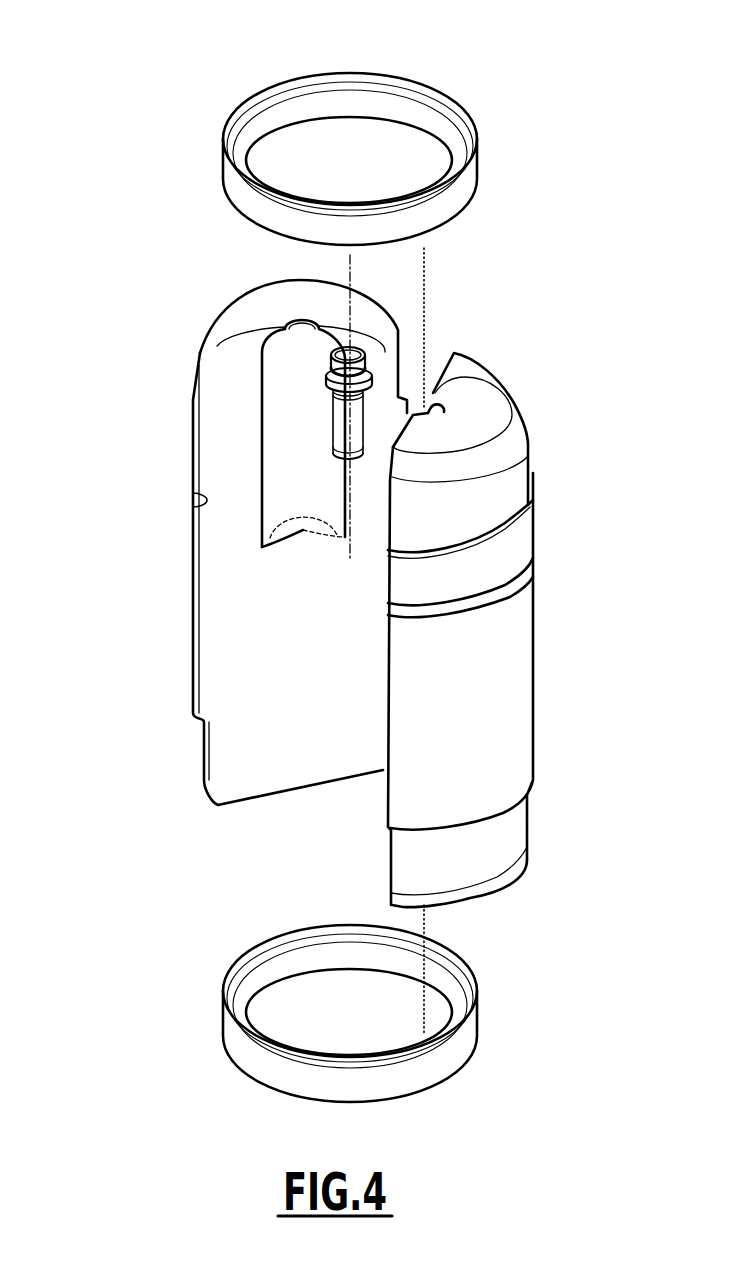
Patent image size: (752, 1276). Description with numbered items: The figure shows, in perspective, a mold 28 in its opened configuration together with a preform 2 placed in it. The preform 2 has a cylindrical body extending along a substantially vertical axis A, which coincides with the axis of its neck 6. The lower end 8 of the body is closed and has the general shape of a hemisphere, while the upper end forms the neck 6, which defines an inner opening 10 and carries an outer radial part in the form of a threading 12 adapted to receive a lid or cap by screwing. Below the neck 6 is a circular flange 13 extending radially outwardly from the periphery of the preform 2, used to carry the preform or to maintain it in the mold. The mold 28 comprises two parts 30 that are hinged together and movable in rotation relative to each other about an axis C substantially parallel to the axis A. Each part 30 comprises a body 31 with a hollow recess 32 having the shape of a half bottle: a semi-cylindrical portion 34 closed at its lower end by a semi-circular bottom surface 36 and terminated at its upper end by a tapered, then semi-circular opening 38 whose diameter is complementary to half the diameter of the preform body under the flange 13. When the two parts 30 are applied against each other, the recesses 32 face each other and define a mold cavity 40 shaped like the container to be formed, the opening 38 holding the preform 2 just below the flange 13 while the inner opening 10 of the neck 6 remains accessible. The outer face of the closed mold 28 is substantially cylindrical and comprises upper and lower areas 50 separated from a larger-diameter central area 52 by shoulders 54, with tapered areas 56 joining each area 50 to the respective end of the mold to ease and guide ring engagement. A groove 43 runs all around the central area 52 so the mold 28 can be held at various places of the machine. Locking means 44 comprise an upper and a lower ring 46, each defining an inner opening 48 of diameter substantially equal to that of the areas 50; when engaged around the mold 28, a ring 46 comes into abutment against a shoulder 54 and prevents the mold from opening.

The preform 2 is at (315, 428).
The neck 6 is at (358, 348).
The lower end 8 is at (352, 460).
The inner opening 10 is at (342, 347).
The threading 12 is at (265, 338).
The circular flange 13 is at (372, 375).
The mold 28 is at (160, 369).
The part 30 is at (268, 735).
The body 31 is at (237, 640).
The hollow recess 32 is at (268, 472).
The semi-cylindrical portion 34 is at (292, 477).
The bottom surface 36 is at (298, 533).
The opening 38 is at (293, 322).
The mold cavity 40 is at (333, 495).
The groove 43 is at (507, 592).
The locking means 44 is at (223, 152).
The ring 46 is at (463, 185).
The inner opening 48 is at (333, 138).
The upper and lower areas 50 is at (513, 467).
The central area 52 is at (507, 636).
The shoulder 54 is at (533, 493).
The tapered area 56 is at (530, 408).
The axis A is at (352, 268).
The axis C is at (425, 248).